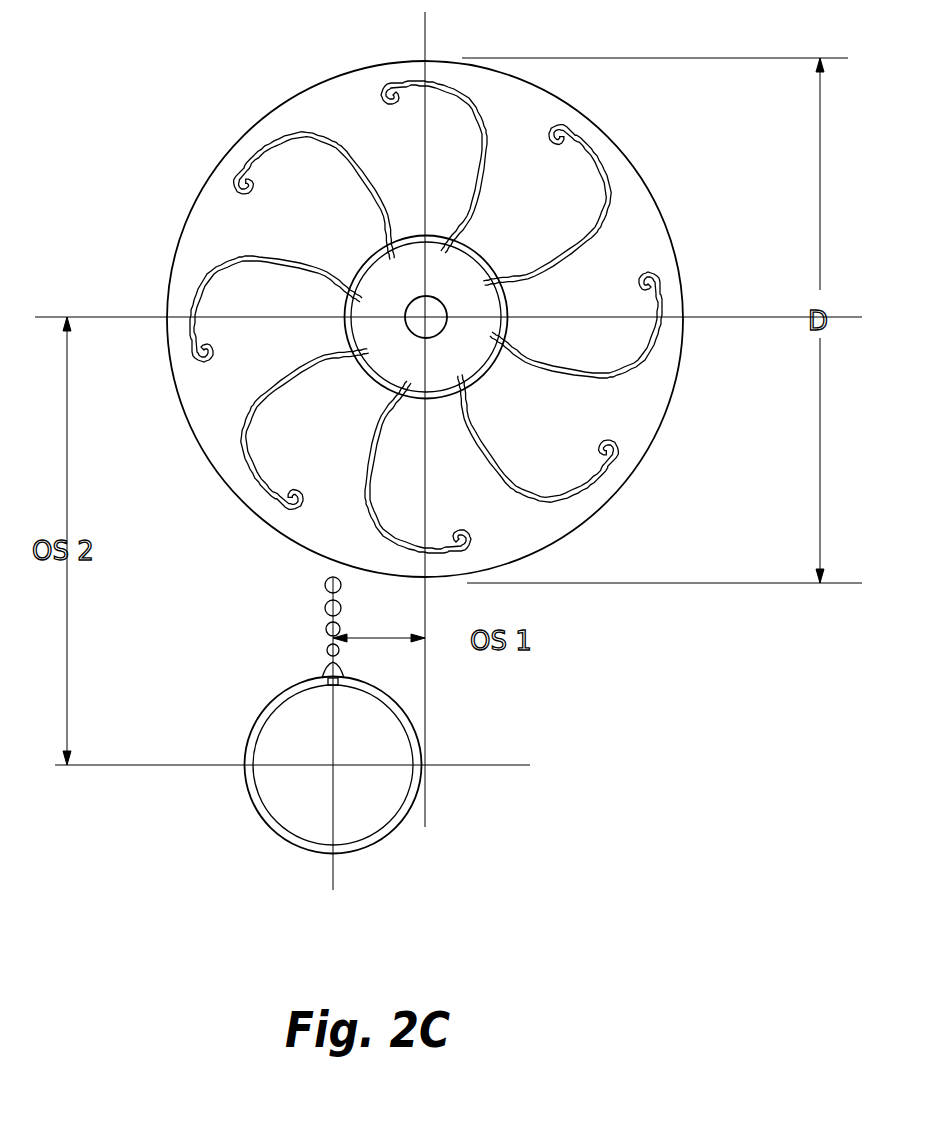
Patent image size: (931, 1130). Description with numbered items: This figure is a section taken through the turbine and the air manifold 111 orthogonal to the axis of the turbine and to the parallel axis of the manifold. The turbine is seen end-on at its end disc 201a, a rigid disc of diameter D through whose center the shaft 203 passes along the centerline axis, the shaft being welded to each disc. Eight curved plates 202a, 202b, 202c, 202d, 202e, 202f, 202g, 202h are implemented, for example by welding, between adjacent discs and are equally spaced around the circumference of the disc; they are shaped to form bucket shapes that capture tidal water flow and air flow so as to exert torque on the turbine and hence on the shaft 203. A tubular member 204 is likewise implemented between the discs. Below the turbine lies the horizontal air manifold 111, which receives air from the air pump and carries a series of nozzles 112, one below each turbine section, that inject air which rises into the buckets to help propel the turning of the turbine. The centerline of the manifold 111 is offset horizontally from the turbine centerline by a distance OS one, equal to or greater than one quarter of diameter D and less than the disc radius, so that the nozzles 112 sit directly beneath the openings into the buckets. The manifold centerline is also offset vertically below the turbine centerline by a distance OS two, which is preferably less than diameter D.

The end disc 201a is at (308, 87).
The curved plate 202a is at (411, 80).
The curved plate 202b is at (267, 147).
The curved plate 202c is at (222, 266).
The curved plate 202d is at (243, 418).
The curved plate 202e is at (377, 532).
The curved plate 202f is at (528, 507).
The curved plate 202g is at (645, 348).
The curved plate 202h is at (600, 197).
The shaft 203 is at (422, 298).
The tubular member 204 is at (360, 373).
The air manifold 111 is at (244, 777).
The nozzle 112 is at (327, 672).